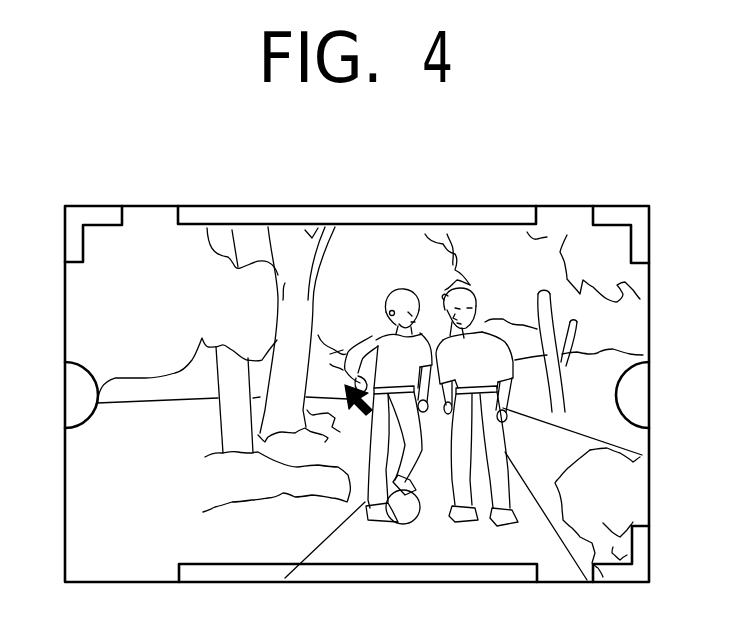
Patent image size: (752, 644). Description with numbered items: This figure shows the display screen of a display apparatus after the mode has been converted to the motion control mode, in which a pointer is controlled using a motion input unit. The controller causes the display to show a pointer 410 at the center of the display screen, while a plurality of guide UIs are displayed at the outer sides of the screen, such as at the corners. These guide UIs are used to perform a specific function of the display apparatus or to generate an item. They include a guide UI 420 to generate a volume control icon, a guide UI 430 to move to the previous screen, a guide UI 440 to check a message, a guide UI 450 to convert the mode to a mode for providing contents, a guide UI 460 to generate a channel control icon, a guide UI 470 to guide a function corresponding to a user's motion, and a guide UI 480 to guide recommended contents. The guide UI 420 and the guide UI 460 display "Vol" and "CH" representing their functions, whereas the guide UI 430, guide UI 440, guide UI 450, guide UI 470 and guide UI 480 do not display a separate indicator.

The pointer 410 is at (372, 386).
The guide UI to generate a volume control icon 420 is at (72, 376).
The guide UI to move to the previous screen 430 is at (90, 214).
The guide UI to check a message 440 is at (468, 214).
The guide UI to convert a mode to a mode for providing contents 450 is at (614, 216).
The guide UI to generate a channel control icon 460 is at (643, 374).
The guide UI to guide a function corresponding to a user's motion 470 is at (643, 547).
The guide UI to guide recommended contents 480 is at (460, 575).